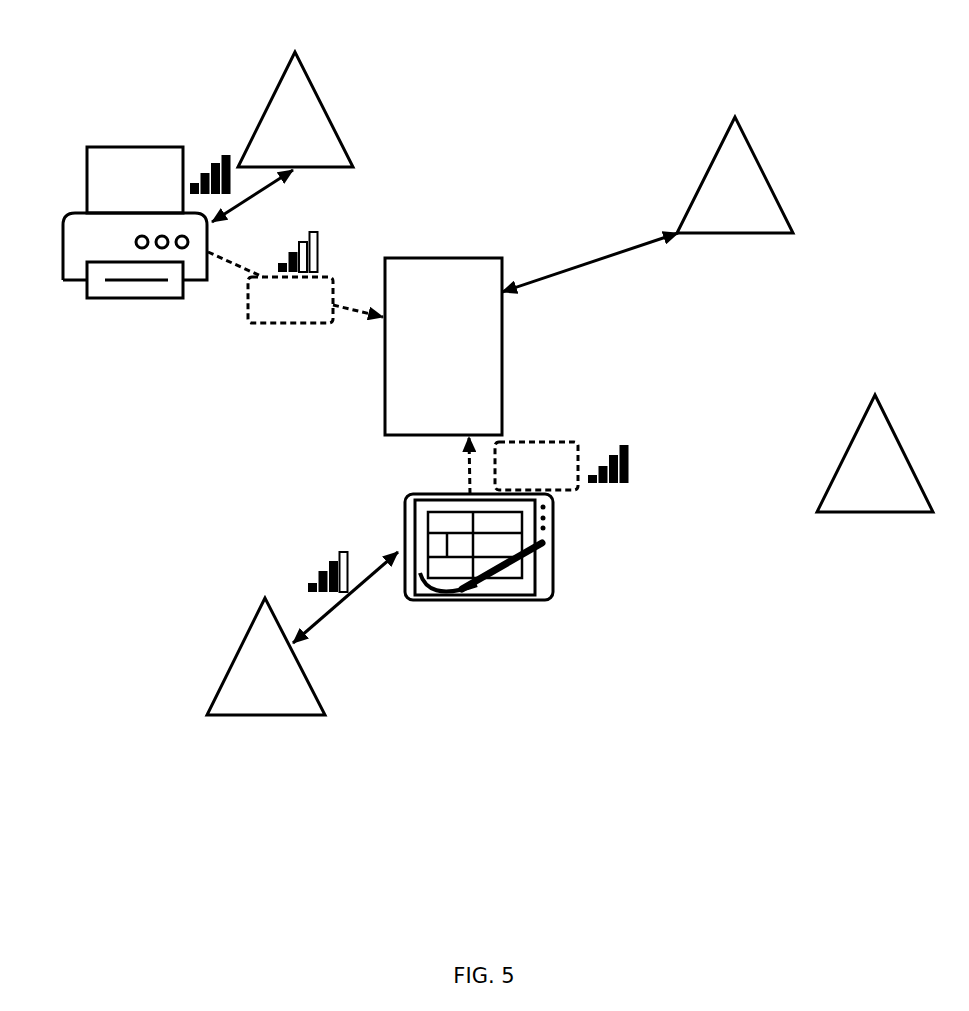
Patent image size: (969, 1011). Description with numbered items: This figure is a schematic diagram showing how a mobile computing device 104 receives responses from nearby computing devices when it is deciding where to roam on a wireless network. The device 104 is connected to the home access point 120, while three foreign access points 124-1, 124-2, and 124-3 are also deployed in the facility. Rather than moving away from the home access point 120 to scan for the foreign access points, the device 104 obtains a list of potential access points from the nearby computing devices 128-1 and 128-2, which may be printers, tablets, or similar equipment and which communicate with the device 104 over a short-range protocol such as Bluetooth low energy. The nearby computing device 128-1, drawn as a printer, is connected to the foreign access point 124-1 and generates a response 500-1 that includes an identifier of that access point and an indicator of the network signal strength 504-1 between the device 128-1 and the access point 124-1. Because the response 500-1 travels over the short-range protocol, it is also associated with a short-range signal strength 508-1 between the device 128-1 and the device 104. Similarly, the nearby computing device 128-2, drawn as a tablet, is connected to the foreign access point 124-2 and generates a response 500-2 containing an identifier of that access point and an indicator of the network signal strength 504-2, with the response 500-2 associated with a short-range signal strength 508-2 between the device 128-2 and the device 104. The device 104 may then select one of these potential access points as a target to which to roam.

The nearby computing device 128-1 is at (137, 147).
The network signal strength 504-1 is at (211, 150).
The foreign access point 124-1 is at (268, 140).
The short-range signal strength 508-1 is at (336, 232).
The home access point 120 is at (717, 205).
The response 500-1 is at (264, 310).
The device 104 is at (425, 358).
The network signal strength 504-2 is at (616, 438).
The foreign access point 124-3 is at (848, 485).
The short-range signal strength 508-2 is at (326, 543).
The response 500-2 is at (510, 476).
The foreign access point 124-2 is at (238, 688).
The nearby computing device 128-2 is at (477, 600).